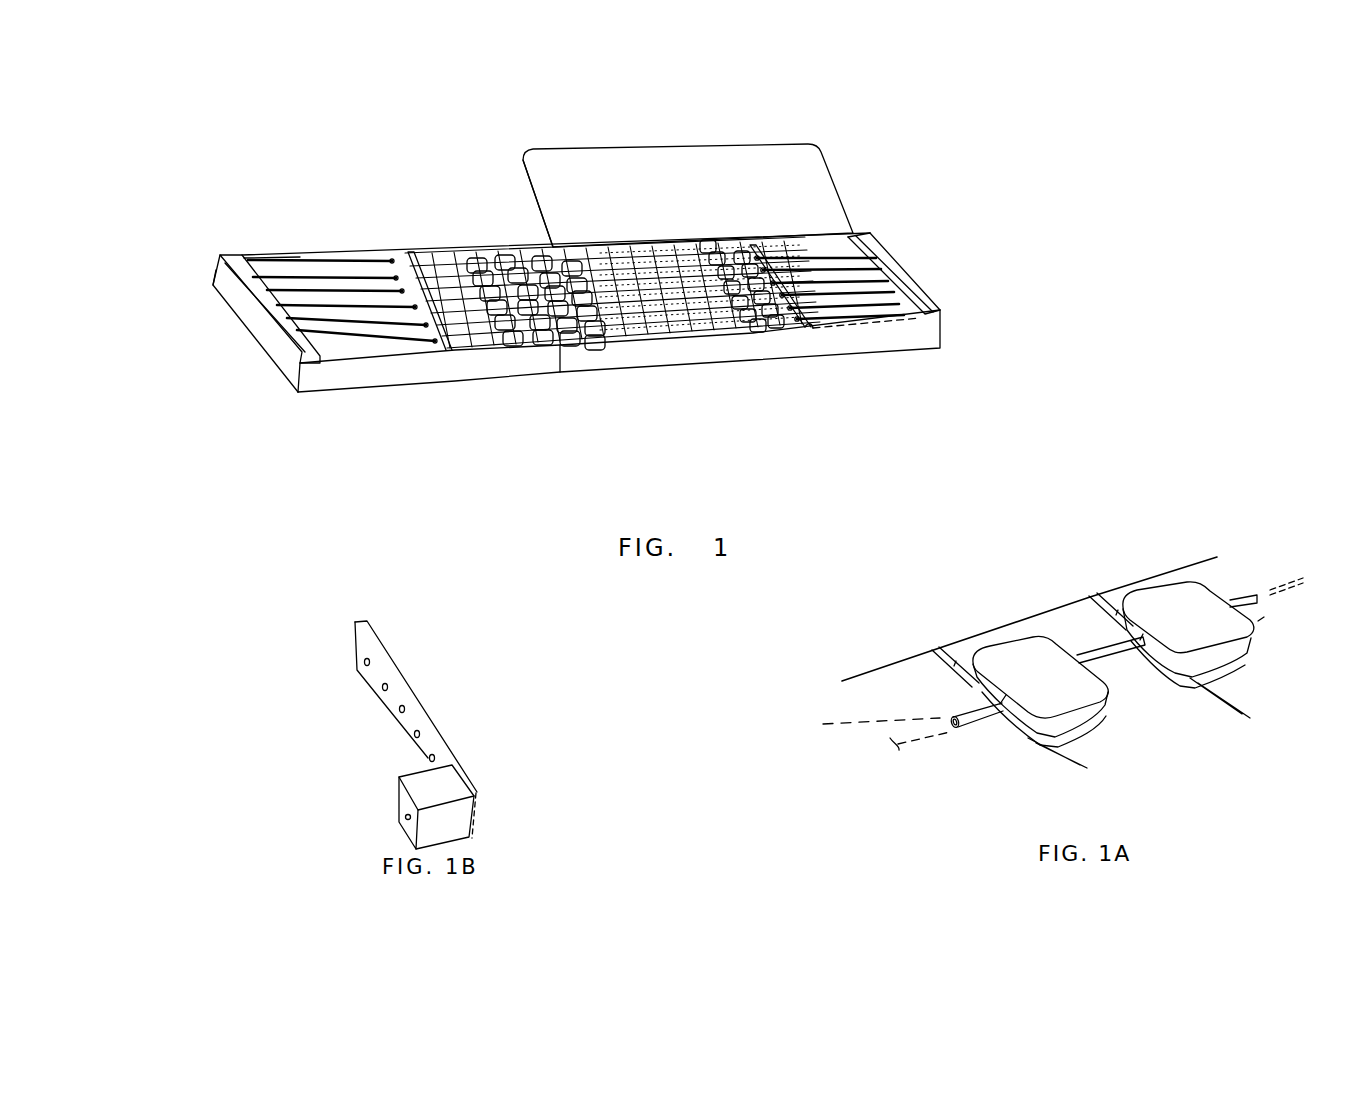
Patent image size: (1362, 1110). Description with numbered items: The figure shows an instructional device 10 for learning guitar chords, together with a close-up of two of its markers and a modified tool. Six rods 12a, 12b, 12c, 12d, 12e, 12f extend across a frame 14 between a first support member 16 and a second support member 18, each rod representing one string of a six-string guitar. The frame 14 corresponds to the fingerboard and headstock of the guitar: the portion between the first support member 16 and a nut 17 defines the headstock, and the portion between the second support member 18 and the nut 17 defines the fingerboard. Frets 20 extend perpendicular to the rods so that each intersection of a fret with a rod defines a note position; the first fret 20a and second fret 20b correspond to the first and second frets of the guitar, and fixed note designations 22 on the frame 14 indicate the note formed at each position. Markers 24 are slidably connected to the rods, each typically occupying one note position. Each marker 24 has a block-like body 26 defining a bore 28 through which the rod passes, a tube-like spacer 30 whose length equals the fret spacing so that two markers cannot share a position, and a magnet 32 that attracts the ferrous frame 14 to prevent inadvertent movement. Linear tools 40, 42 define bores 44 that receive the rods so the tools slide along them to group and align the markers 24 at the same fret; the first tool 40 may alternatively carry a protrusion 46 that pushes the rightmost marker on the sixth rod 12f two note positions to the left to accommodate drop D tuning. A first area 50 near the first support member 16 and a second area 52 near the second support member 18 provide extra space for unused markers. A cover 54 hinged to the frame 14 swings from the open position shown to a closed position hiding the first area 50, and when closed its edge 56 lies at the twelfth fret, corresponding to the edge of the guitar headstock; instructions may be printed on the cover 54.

In FIG. 1, the instructional device 10 is at (1006, 124).
In FIG. 1A, the instructional device 10 is at (1237, 474).
In FIG. 1, the rod 12a is at (317, 268).
In FIG. 1A, the rod 12a is at (854, 734).
In FIG. 1, the rod 12b is at (323, 290).
In FIG. 1, the rod 12c is at (333, 293).
In FIG. 1, the rod 12d is at (347, 340).
In FIG. 1, the rod 12e is at (383, 347).
In FIG. 1, the rod 12f is at (397, 350).
In FIG. 1, the frame 14 is at (590, 366).
In FIG. 1A, the frame 14 is at (855, 676).
In FIG. 1, the first support member 16 is at (920, 288).
In FIG. 1, the nut 17 is at (780, 327).
In FIG. 1, the second support member 18 is at (278, 327).
In FIG. 1, the frets 20 is at (428, 252).
In FIG. 1A, the frets 20 is at (956, 661).
In FIG. 1, the first fret 20a is at (740, 250).
In FIG. 1, the second fret 20b is at (707, 247).
In FIG. 1A, the fixed note designations 22 is at (957, 797).
In FIG. 1, the markers 24 is at (490, 257).
In FIG. 1A, the markers 24 is at (1010, 624).
In FIG. 1A, the body 26 is at (1104, 712).
In FIG. 1A, the bore 28 is at (1005, 717).
In FIG. 1A, the spacer 30 is at (1123, 637).
In FIG. 1A, the magnet 32 is at (1045, 742).
In FIG. 1, the first tool 40 is at (823, 330).
In FIG. 1B, the first tool 40 is at (397, 662).
In FIG. 1, the tool 42 is at (443, 350).
In FIG. 1, the bores 44 is at (437, 350).
In FIG. 1B, the bores 44 is at (418, 731).
In FIG. 1B, the protrusion 46 is at (437, 778).
In FIG. 1, the first area 50 is at (882, 348).
In FIG. 1, the second area 52 is at (286, 246).
In FIG. 1, the cover 54 is at (818, 165).
In FIG. 1, the edge 56 is at (523, 173).